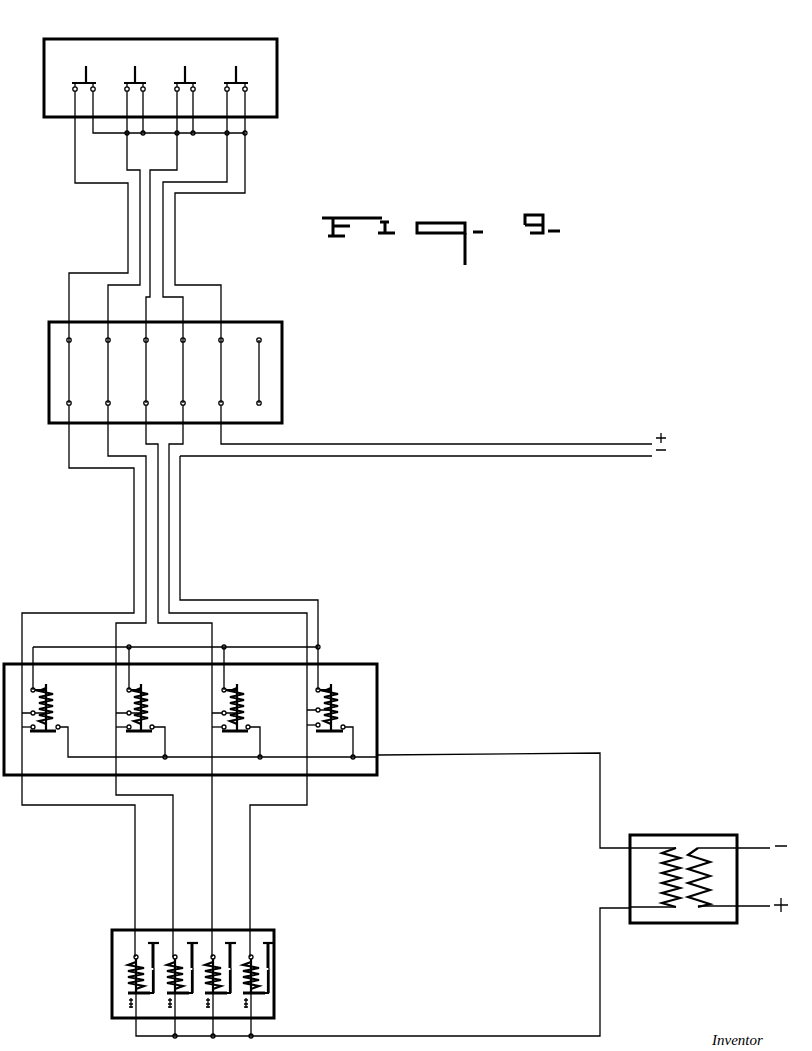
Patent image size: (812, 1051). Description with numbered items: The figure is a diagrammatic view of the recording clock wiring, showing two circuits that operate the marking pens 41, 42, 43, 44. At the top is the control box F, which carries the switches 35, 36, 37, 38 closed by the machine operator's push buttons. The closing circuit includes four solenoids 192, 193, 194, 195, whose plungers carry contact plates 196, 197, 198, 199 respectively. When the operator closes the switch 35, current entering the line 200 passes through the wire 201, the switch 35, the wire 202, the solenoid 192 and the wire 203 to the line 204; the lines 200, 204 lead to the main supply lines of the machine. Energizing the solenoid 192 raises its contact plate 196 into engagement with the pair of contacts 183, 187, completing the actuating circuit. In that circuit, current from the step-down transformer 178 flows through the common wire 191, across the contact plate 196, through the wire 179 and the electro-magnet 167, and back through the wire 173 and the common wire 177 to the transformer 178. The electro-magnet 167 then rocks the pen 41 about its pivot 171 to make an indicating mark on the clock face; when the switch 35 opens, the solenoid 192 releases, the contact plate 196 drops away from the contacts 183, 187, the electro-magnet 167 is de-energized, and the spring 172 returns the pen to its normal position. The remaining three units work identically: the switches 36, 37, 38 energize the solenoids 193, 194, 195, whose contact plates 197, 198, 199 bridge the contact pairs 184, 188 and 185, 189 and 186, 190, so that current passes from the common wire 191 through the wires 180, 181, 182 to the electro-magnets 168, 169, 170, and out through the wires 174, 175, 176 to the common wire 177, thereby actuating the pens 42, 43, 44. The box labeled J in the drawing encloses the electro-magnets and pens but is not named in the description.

The switch 35 is at (77, 82).
The switch 36 is at (137, 80).
The switch 37 is at (187, 80).
The switch 38 is at (237, 80).
The control box F is at (281, 75).
The wire 201 is at (95, 134).
The wire 202 is at (68, 291).
The line 200 is at (500, 422).
The line 204 is at (383, 457).
The wire 203 is at (86, 646).
The solenoid 192 is at (54, 690).
The solenoid 193 is at (149, 690).
The solenoid 194 is at (245, 690).
The solenoid 195 is at (339, 690).
The contact 187 is at (59, 725).
The contact 188 is at (153, 725).
The contact 189 is at (249, 725).
The contact 190 is at (344, 725).
The contact 184 is at (127, 727).
The contact 185 is at (222, 727).
The contact 186 is at (316, 726).
The contact 183 is at (44, 732).
The contact plate 197 is at (140, 732).
The contact plate 198 is at (236, 732).
The contact plate 199 is at (332, 732).
The contact plate 196 is at (68, 758).
The common wire 191 is at (425, 756).
The wire 179 is at (133, 840).
The wire 180 is at (173, 852).
The wire 181 is at (212, 860).
The wire 182 is at (251, 842).
The relay box J is at (262, 922).
The pen 41 is at (152, 940).
The pen 42 is at (190, 940).
The pen 43 is at (228, 940).
The pen 44 is at (272, 946).
The electro-magnet 167 is at (128, 975).
The electro-magnet 168 is at (188, 990).
The electro-magnet 169 is at (226, 990).
The electro-magnet 170 is at (260, 978).
The pivot 171 is at (201, 1009).
The spring 172 is at (128, 1004).
The wire 173 is at (136, 1030).
The wire 174 is at (175, 1031).
The wire 175 is at (213, 1031).
The wire 176 is at (255, 1028).
The common wire 177 is at (322, 1037).
The step-down transformer 178 is at (672, 930).